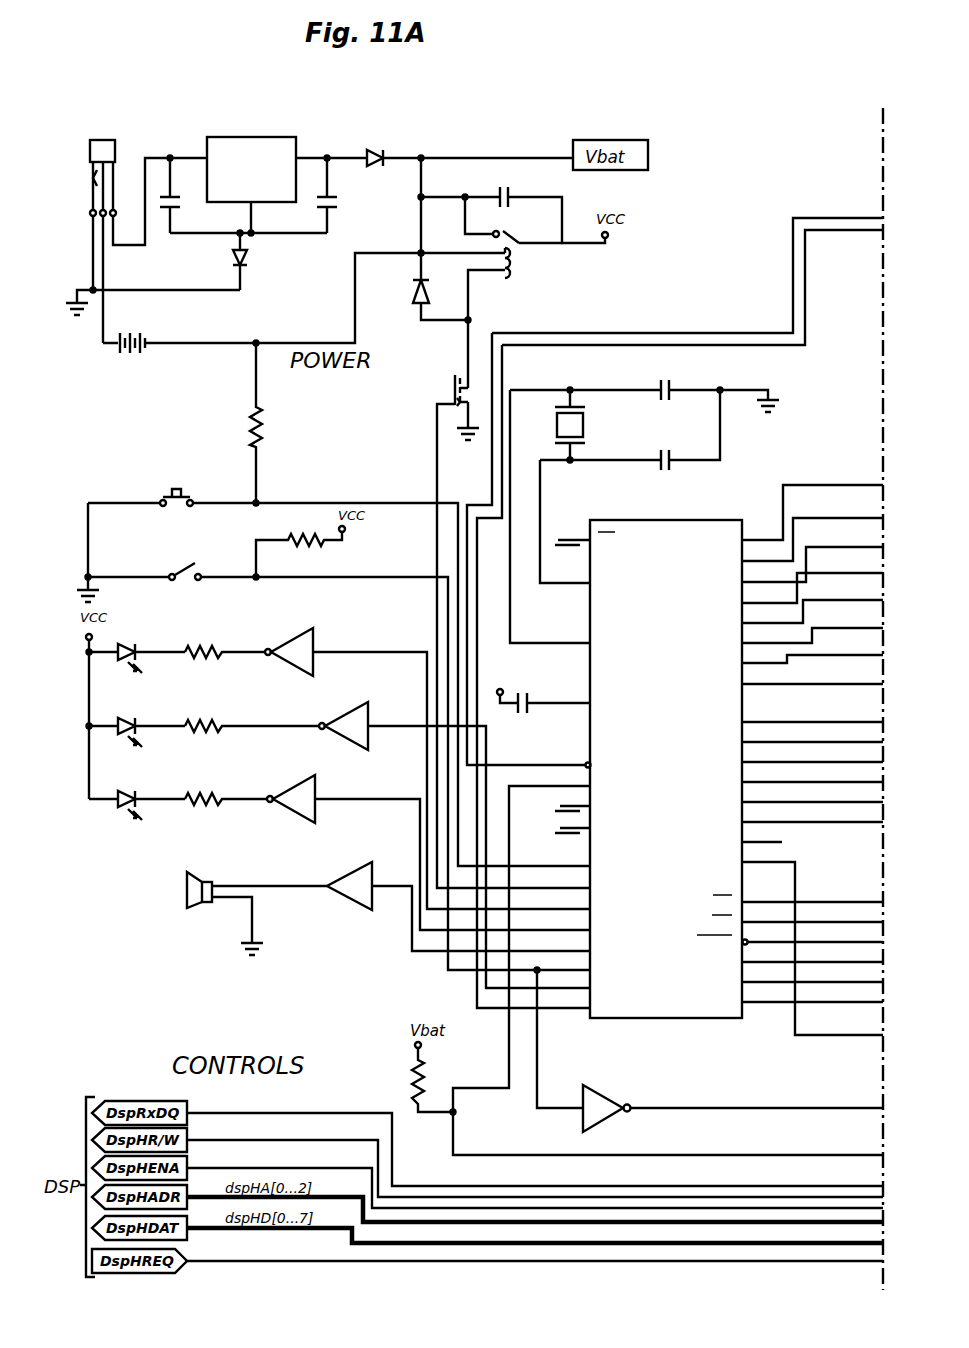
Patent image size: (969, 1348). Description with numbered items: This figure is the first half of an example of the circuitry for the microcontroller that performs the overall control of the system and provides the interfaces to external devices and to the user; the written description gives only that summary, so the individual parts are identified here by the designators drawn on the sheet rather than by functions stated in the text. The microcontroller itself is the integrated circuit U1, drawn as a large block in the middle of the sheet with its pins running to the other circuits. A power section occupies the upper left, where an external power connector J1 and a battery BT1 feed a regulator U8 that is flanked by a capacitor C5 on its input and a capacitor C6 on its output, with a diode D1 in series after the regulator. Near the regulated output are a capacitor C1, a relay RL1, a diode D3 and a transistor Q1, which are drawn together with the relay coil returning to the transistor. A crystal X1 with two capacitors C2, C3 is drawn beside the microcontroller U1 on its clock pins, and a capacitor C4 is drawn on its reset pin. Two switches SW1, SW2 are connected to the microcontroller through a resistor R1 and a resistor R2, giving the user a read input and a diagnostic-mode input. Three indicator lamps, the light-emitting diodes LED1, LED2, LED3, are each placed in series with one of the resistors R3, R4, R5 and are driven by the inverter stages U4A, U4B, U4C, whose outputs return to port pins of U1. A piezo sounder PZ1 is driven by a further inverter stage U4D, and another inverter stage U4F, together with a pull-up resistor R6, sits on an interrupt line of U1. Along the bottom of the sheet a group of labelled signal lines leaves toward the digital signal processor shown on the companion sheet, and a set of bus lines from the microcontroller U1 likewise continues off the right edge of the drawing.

The external power jack J1 is at (136, 226).
The battery 4xAA NiCad BT1 is at (304, 319).
The capacitor 10u C5 is at (183, 195).
The voltage regulator LM7805 U8 is at (286, 164).
The capacitor 100n C6 is at (343, 195).
The diode 1N4001 D1 is at (464, 141).
The capacitor 100n C1 is at (514, 207).
The latching relay RL1 is at (531, 292).
The diode 1N4001 D3 is at (415, 299).
The MOSFET VN10L Q1 is at (491, 624).
The crystal 4MHz X1 is at (585, 516).
The capacitor 30p C2 is at (720, 389).
The capacitor 30p C3 is at (694, 442).
The reset capacitor C4 is at (540, 699).
The 80C51 microprocessor U1 is at (719, 764).
The resistor 47k R1 is at (273, 423).
The read switch SW1 is at (339, 663).
The diagnostic mode switch SW2 is at (339, 758).
The resistor 47k R2 is at (300, 546).
The green read LED LED1 is at (141, 650).
The resistor 200k R3 is at (225, 650).
The inverter 74HC04 U4A is at (424, 760).
The amber host LED LED2 is at (144, 722).
The resistor 200R R4 is at (252, 723).
The inverter 74HC04 U4B is at (449, 837).
The red error LED LED3 is at (146, 798).
The resistor 200R R5 is at (226, 795).
The inverter 74HC04 U4C is at (426, 844).
The piezo sounder PZ1 is at (203, 902).
The inverter 74HC04 U4D is at (441, 893).
The inverter 74HC04 U4F is at (710, 1055).
The resistor 47k R6 is at (418, 1077).